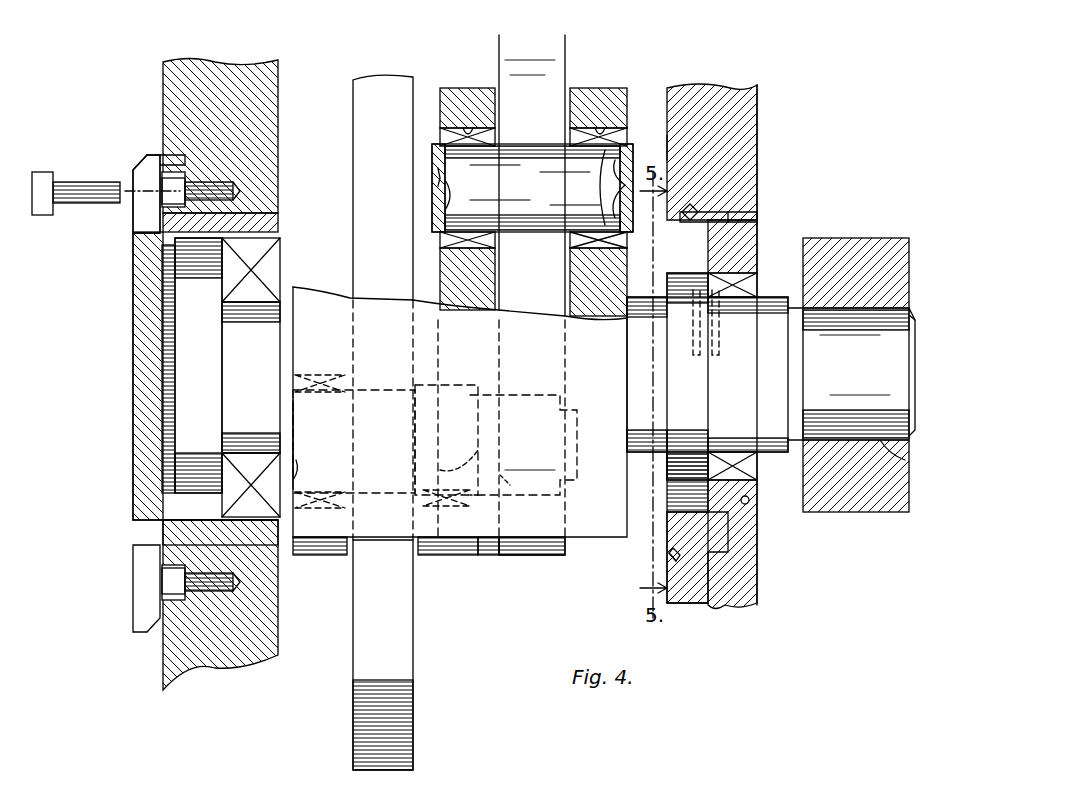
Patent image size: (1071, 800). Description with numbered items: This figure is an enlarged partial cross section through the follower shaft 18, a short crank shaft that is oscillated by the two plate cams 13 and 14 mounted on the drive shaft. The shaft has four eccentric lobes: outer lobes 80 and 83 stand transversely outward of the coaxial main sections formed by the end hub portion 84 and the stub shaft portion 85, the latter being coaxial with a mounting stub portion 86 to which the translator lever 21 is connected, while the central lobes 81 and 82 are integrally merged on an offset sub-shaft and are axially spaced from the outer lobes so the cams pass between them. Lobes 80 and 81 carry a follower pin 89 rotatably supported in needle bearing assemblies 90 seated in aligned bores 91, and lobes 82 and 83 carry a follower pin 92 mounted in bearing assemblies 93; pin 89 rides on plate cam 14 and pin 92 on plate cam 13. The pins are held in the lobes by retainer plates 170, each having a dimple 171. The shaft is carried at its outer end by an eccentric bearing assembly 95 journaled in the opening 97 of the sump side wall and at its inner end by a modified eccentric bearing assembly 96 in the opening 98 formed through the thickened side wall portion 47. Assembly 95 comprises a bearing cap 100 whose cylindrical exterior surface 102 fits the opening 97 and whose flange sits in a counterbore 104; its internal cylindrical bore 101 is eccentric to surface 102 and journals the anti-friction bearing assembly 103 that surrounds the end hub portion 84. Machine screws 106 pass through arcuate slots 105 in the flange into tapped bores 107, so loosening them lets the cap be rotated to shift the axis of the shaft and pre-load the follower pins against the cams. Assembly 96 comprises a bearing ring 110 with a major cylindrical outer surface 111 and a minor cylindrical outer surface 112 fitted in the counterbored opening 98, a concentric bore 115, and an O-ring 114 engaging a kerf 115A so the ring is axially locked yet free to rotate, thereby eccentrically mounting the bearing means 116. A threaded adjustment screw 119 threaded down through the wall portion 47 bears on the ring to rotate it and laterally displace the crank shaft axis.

The plate cam 13 is at (397, 78).
The plate cam 14 is at (538, 562).
The follower shaft 18 is at (918, 312).
The translator lever 21 is at (875, 516).
The thickened side wall portion 47 is at (168, 638).
The lobe 80 is at (592, 86).
The lobe 81 is at (462, 86).
The lobe 82 is at (453, 557).
The lobe 83 is at (318, 556).
The end hub portion 84 is at (290, 306).
The stub shaft portion 85 is at (782, 354).
The mounting stub portion 86 is at (905, 460).
The follower pin 89 is at (480, 425).
The needle bearing assembly 90 is at (440, 130).
The bore 91 is at (470, 128).
The follower pin 92 is at (390, 543).
The bearing assembly 93 is at (325, 388).
The bearing assembly 95 is at (132, 332).
The bearing assembly 96 is at (762, 250).
The opening 97 is at (293, 527).
The opening 98 is at (730, 510).
The bearing cap 100 is at (145, 398).
The internal cylindrical bore 101 is at (175, 512).
The cylindrical exterior surface 102 is at (278, 218).
The anti-friction bearing assembly 103 is at (216, 368).
The counterbore 104 is at (153, 157).
The arcuate slot 105 is at (135, 228).
The machine screw 106 is at (97, 178).
The tapped bore 107 is at (215, 188).
The bearing ring 110 is at (745, 215).
The major cylindrical outer surface 111 is at (700, 208).
The minor cylindrical outer surface 112 is at (752, 503).
The O-ring 114 is at (692, 560).
The bore 115 is at (665, 515).
The kerf 115A is at (670, 560).
The bearing means 116 is at (178, 440).
The threaded adjustment screw 119 is at (720, 346).
The retainer plate 170 is at (432, 176).
The dimple 171 is at (612, 185).